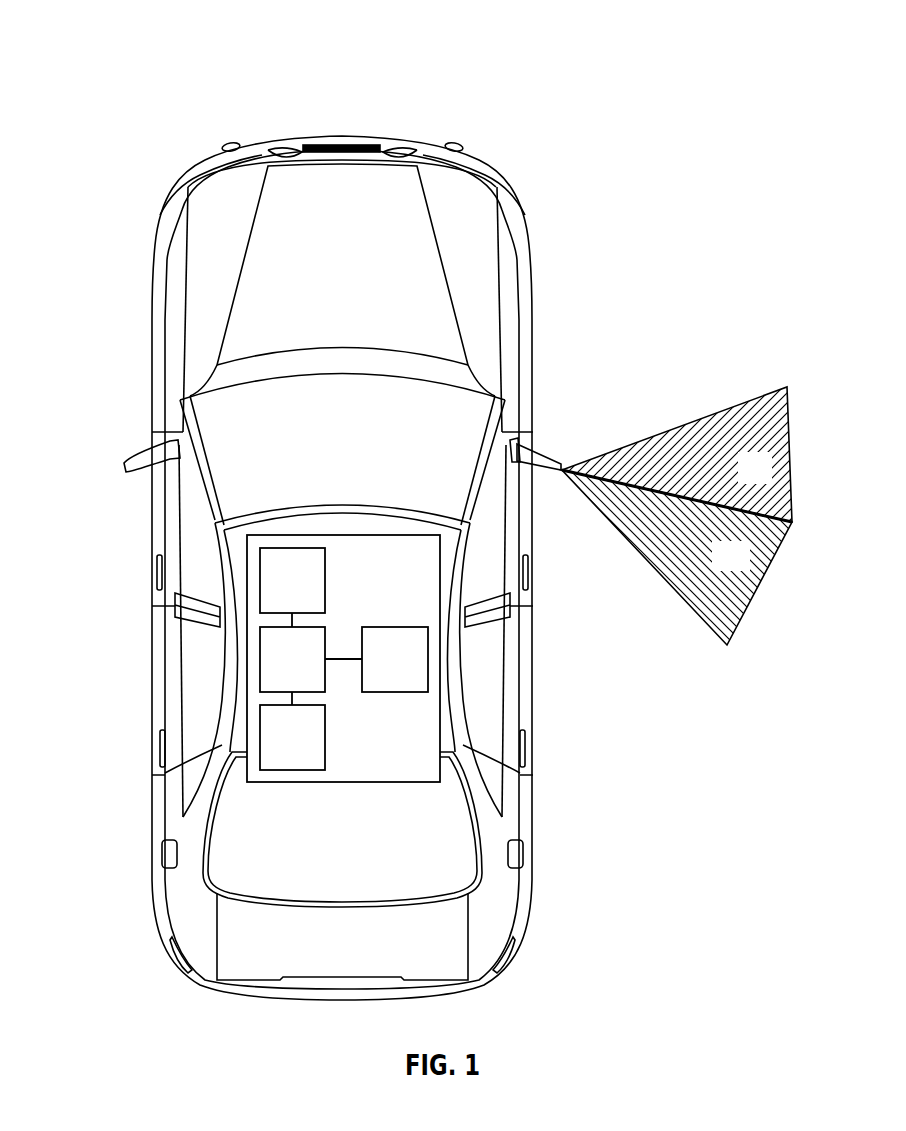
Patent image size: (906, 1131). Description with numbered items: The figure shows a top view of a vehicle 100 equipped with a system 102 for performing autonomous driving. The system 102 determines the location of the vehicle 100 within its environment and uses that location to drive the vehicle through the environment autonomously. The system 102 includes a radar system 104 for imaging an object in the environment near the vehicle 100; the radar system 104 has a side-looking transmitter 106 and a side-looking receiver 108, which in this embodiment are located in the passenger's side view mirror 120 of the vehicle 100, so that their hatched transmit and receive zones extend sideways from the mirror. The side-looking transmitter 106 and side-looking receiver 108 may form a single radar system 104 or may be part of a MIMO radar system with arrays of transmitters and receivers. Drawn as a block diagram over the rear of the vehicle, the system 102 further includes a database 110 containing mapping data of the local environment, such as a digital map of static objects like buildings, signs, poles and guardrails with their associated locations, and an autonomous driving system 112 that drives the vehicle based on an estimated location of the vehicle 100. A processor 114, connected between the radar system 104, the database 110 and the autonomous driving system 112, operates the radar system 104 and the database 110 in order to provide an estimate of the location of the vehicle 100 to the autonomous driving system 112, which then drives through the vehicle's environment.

The vehicle 100 is at (104, 53).
The system 102 is at (440, 635).
The radar system 104 is at (314, 597).
The side-looking transmitter 106 is at (748, 403).
The side-looking receiver 108 is at (707, 618).
The database 110 is at (314, 750).
The autonomous driving system 112 is at (417, 672).
The processor 114 is at (314, 672).
The passenger's side view mirror 120 is at (541, 456).